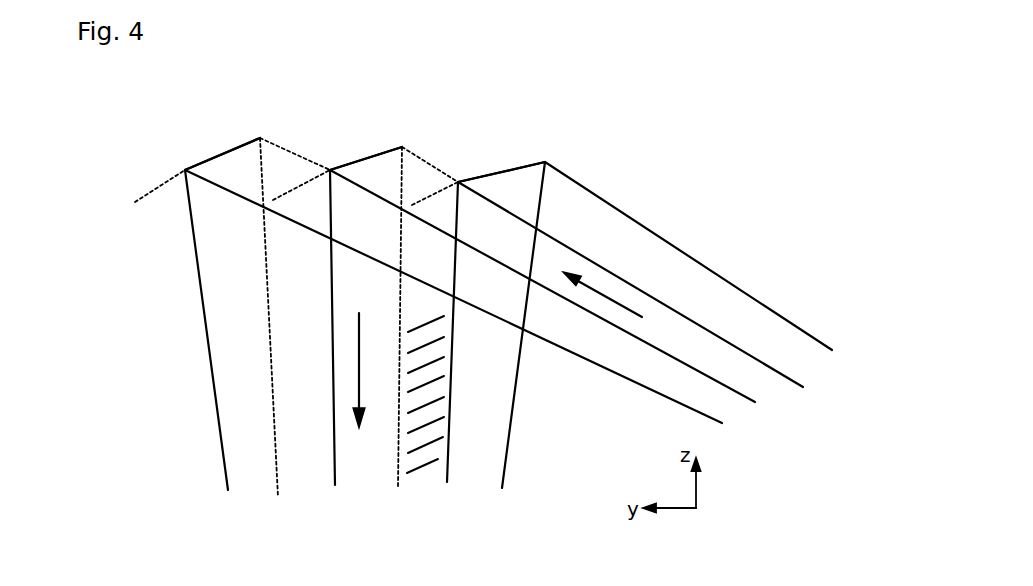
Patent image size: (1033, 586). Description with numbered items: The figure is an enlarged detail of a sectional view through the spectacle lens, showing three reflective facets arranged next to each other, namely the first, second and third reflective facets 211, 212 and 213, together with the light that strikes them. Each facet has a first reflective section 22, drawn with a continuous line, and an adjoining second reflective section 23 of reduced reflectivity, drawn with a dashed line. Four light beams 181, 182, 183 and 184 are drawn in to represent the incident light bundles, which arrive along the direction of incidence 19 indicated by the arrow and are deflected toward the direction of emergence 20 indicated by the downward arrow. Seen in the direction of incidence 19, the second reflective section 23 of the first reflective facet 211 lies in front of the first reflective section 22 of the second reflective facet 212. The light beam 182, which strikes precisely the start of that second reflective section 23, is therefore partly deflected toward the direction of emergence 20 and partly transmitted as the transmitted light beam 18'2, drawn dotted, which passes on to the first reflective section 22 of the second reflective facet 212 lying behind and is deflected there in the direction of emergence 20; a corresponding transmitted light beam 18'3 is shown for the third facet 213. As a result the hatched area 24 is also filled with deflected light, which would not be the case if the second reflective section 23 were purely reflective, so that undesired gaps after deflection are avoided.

The first reflective section 22 is at (218, 147).
The second reflective section 23 is at (158, 186).
The third reflective facet 213 is at (247, 136).
The second reflective facet 212 is at (390, 145).
The first reflective facet 211 is at (538, 153).
The transmitted light beam 18'3 is at (285, 295).
The transmitted light beam 18'2 is at (435, 315).
The first light beam 181 is at (618, 210).
The second light beam 182 is at (633, 285).
The third light beam 183 is at (667, 350).
The fourth light beam 184 is at (562, 345).
The hatched area 24 is at (421, 474).
The direction of emergence 20 is at (362, 328).
The direction of incidence 19 is at (618, 307).